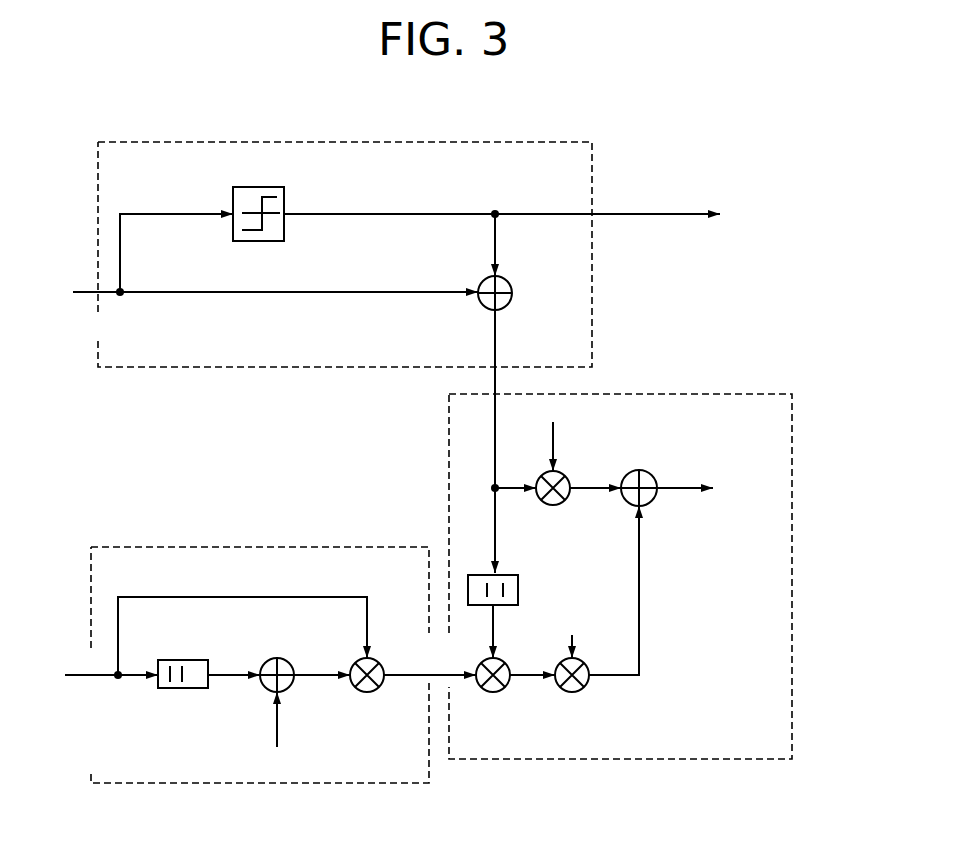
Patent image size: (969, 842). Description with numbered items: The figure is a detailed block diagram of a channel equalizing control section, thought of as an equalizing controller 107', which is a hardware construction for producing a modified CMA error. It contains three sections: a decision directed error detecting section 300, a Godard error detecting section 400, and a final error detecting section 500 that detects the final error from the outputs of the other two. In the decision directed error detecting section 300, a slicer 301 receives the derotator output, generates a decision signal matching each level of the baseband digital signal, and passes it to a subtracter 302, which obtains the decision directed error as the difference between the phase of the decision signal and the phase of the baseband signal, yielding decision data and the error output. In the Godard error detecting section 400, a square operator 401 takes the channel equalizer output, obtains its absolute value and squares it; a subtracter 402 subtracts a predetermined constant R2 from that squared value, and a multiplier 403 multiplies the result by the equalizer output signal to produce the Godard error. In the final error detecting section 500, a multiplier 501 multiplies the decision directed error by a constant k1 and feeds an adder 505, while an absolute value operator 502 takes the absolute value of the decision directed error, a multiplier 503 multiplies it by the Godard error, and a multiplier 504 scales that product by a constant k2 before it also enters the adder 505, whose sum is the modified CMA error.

The equalizing controller 107' is at (413, 417).
The decision directed error detecting section 300 is at (500, 142).
The slicer 301 is at (284, 228).
The subtracter 302 is at (507, 306).
The Godard error detecting section 400 is at (270, 547).
The square operator 401 is at (196, 688).
The subtracter 402 is at (287, 689).
The multiplier 403 is at (372, 692).
The final error detecting section 500 is at (682, 394).
The multiplier 501 is at (561, 504).
The absolute value operator 502 is at (518, 590).
The multiplier 503 is at (497, 692).
The multiplier 504 is at (576, 692).
The adder 505 is at (650, 502).